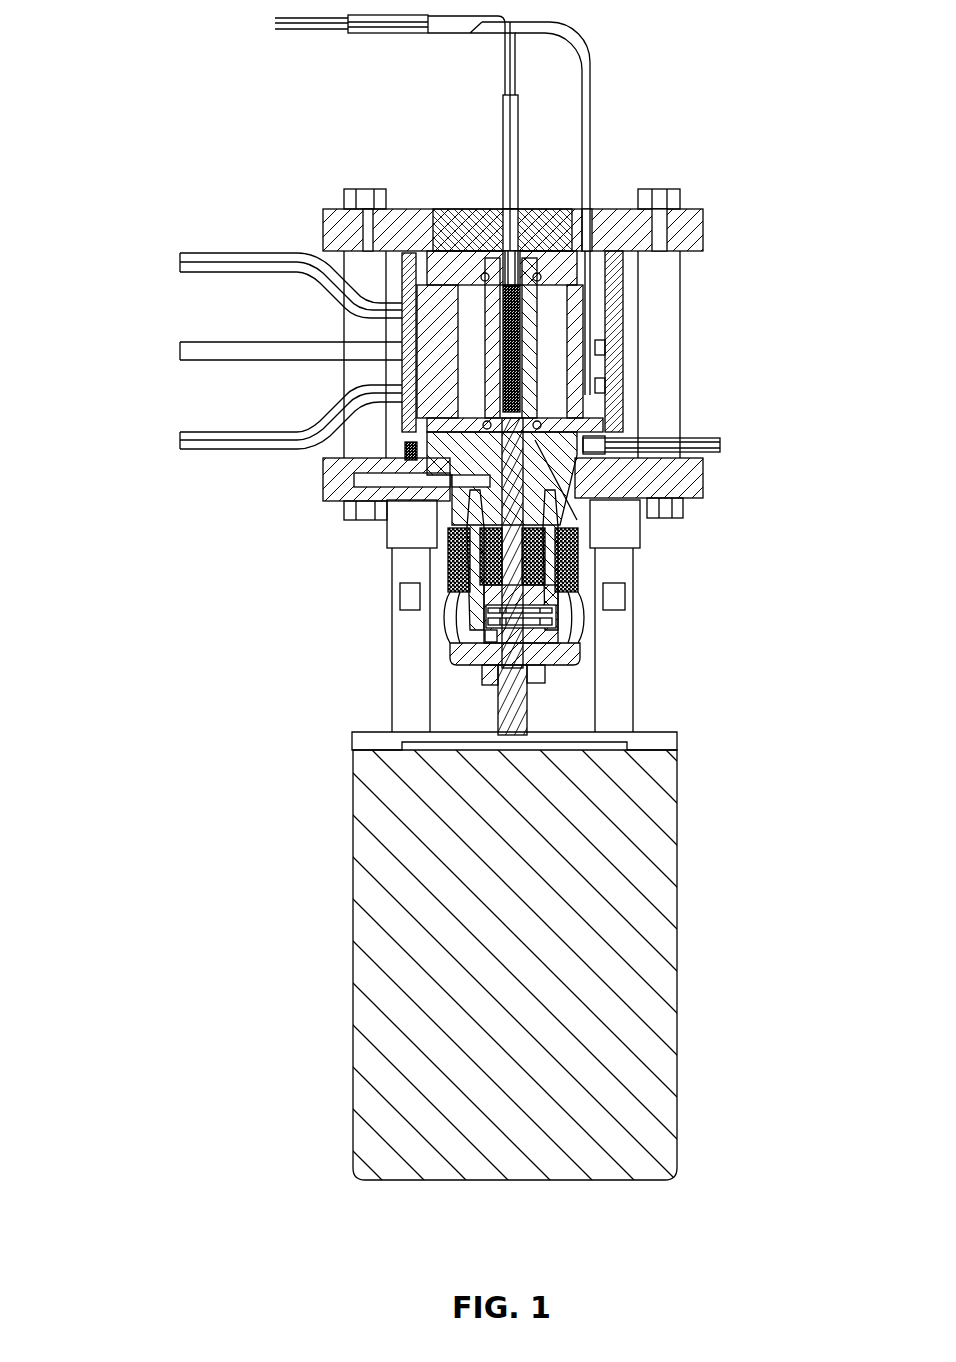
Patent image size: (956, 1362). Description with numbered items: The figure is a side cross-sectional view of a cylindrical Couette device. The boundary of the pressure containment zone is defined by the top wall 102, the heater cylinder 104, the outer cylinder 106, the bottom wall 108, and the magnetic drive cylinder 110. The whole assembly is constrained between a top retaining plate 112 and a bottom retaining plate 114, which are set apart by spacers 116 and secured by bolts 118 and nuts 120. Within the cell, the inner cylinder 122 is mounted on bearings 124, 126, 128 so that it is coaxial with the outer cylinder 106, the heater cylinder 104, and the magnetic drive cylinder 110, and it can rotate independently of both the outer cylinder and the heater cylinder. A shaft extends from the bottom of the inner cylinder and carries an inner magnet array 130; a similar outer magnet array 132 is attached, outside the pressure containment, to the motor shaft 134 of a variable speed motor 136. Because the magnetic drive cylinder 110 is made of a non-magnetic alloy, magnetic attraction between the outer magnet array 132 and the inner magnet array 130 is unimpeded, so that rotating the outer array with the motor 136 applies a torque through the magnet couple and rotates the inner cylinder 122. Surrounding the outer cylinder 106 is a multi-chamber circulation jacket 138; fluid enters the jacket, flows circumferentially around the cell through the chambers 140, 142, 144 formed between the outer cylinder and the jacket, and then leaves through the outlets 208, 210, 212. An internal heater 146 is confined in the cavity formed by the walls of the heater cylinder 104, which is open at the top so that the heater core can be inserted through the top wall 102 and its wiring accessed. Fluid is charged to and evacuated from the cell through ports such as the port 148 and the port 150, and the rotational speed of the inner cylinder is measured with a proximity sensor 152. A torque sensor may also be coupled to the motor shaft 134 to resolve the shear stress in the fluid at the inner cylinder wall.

The top wall 102 is at (468, 211).
The heater cylinder 104 is at (537, 230).
The outer cylinder 106 is at (434, 316).
The bottom wall 108 is at (577, 519).
The magnetic drive cylinder 110 is at (465, 608).
The top retaining plate 112 is at (704, 209).
The bottom retaining plate 114 is at (705, 500).
The spacers 116 is at (343, 384).
The bolts 118 is at (345, 189).
The nuts 120 is at (343, 523).
The inner cylinder 122 is at (611, 386).
The bearing 124 is at (480, 270).
The bearing 126 is at (482, 429).
The bearing 128 is at (495, 588).
The inner magnet array 130 is at (483, 551).
The outer magnet array 132 is at (573, 578).
The motor shaft 134 is at (496, 704).
The motor 136 is at (357, 777).
The circulation jacket 138 is at (402, 327).
The chamber 140 is at (607, 305).
The chamber 142 is at (607, 348).
The chamber 144 is at (544, 387).
The internal heater 146 is at (519, 367).
The port 148 is at (499, 645).
The port 150 is at (723, 448).
The proximity sensor 152 is at (472, 483).
The outlet 208 is at (178, 252).
The outlet 210 is at (180, 352).
The outlet 212 is at (180, 450).